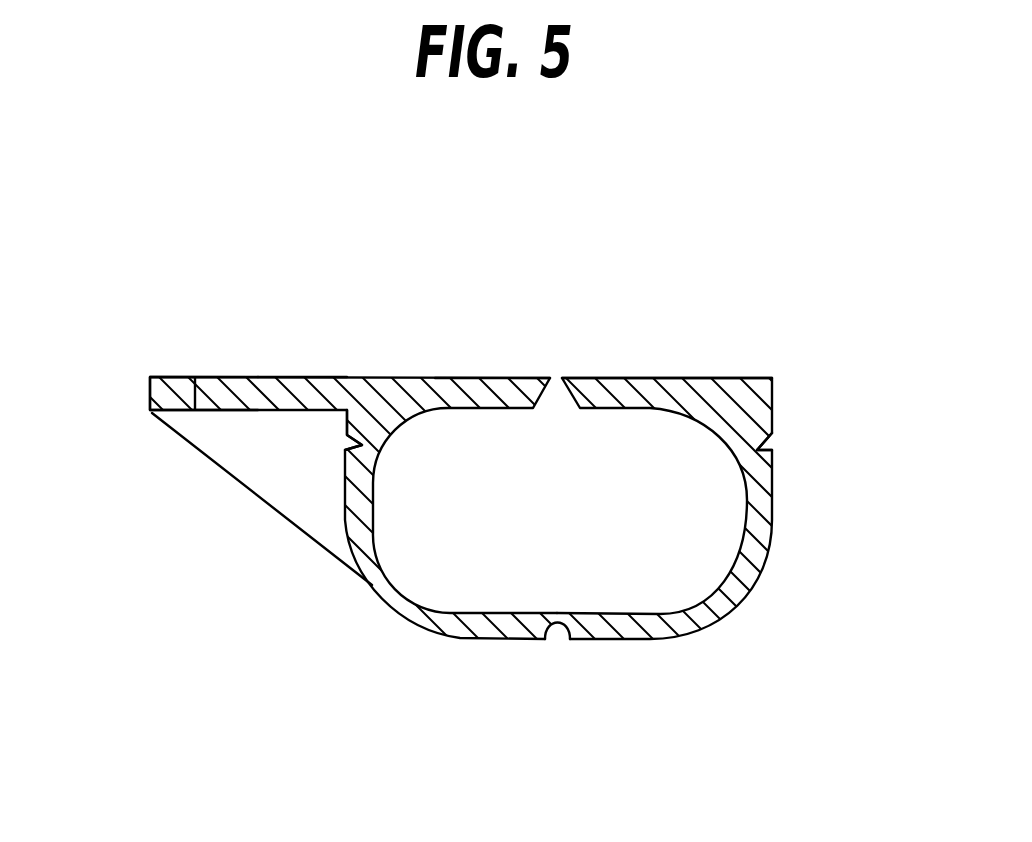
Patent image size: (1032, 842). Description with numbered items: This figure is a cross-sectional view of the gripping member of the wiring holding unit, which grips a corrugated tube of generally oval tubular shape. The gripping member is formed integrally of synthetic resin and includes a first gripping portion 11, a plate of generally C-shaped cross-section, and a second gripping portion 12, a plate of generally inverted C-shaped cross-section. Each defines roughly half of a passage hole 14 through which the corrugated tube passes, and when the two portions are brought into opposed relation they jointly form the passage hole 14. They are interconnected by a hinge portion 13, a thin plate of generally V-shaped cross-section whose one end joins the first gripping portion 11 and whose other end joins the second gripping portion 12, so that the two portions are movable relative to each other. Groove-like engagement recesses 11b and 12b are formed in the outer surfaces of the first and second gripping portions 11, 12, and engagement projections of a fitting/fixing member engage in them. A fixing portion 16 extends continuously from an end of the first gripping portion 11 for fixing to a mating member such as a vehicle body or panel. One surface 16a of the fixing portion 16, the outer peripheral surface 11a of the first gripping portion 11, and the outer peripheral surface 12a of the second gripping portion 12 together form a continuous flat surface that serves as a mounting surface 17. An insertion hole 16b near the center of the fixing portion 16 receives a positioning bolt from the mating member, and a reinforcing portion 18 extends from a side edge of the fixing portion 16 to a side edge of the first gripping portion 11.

The first gripping portion 11 is at (430, 633).
The outer peripheral surface of the first gripping portion 11a is at (465, 377).
The engagement recess 11b is at (347, 436).
The second gripping portion 12 is at (743, 597).
The outer peripheral surface of the second gripping portion 12a is at (668, 377).
The engagement recess 12b is at (773, 440).
The hinge portion 13 is at (557, 650).
The passage hole 14 is at (625, 552).
The fixing portion 16 is at (150, 390).
The one surface of the fixing portion 16a is at (308, 377).
The insertion hole 16b is at (212, 392).
The mounting surface 17 is at (745, 268).
The reinforcing portion 18 is at (283, 523).